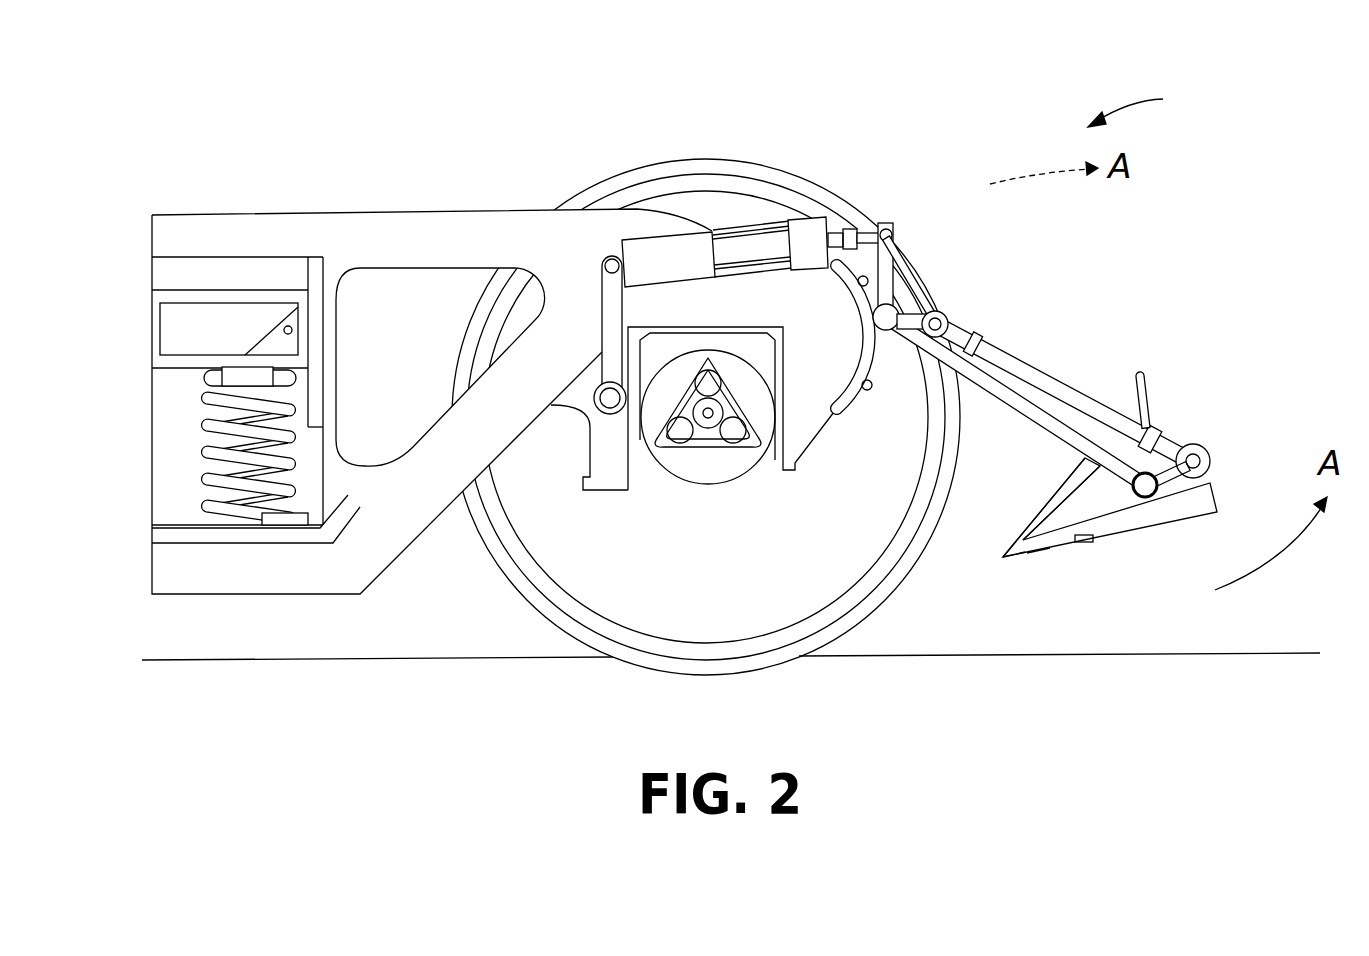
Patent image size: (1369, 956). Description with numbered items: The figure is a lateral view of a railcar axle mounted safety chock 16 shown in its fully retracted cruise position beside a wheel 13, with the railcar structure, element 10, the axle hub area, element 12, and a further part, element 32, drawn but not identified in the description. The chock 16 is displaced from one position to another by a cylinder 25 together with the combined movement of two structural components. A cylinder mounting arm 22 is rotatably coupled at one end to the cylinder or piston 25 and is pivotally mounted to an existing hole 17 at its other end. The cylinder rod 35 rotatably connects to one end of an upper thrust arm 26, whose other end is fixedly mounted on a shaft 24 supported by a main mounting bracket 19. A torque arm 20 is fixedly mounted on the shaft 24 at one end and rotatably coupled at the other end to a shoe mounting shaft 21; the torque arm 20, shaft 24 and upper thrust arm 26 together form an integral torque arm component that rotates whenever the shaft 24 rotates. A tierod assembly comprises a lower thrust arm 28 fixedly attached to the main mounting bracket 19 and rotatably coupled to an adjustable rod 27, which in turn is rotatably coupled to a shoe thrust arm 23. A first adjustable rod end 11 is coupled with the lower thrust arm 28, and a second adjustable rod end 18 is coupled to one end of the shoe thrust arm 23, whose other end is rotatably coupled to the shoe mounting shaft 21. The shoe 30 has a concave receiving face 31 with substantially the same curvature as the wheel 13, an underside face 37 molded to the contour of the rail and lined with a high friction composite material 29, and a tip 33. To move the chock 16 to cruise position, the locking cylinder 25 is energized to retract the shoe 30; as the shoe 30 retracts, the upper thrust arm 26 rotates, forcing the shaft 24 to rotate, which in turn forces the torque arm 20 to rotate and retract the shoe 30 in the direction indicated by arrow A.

The frame 10 is at (348, 228).
The first adjustable rod end 11 is at (1028, 345).
The hub 12 is at (697, 474).
The wheel 13 is at (743, 604).
The safety chock 16 is at (1149, 101).
The existing hole 17 is at (603, 401).
The second adjustable rod end 18 is at (1170, 432).
The main mounting bracket 19 is at (872, 360).
The torque arm 20 is at (1006, 399).
The shoe mounting shaft 21 is at (1148, 492).
The cylinder mounting arm 22 is at (606, 305).
The shoe thrust arm 23 is at (1214, 486).
The shaft 24 is at (893, 315).
The cylinder 25 is at (651, 253).
The upper thrust arm 26 is at (890, 270).
The adjustable rod 27 is at (1037, 366).
The lower thrust arm 28 is at (941, 318).
The high friction composite material 29 is at (1093, 546).
The shoe 30 is at (1215, 507).
The receiving face 31 is at (1077, 492).
The adjustment rod 32 is at (1140, 375).
The tip 33 is at (1003, 557).
The cylinder rod 35 is at (871, 232).
The underside face 37 is at (1033, 554).